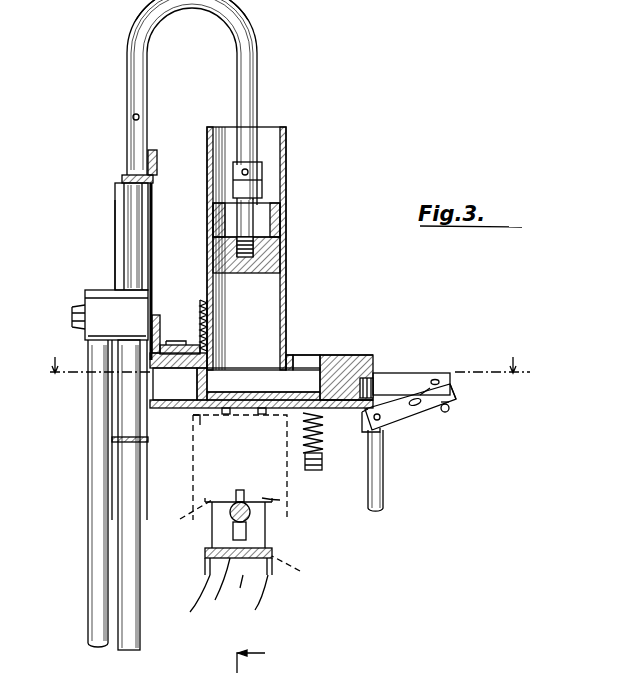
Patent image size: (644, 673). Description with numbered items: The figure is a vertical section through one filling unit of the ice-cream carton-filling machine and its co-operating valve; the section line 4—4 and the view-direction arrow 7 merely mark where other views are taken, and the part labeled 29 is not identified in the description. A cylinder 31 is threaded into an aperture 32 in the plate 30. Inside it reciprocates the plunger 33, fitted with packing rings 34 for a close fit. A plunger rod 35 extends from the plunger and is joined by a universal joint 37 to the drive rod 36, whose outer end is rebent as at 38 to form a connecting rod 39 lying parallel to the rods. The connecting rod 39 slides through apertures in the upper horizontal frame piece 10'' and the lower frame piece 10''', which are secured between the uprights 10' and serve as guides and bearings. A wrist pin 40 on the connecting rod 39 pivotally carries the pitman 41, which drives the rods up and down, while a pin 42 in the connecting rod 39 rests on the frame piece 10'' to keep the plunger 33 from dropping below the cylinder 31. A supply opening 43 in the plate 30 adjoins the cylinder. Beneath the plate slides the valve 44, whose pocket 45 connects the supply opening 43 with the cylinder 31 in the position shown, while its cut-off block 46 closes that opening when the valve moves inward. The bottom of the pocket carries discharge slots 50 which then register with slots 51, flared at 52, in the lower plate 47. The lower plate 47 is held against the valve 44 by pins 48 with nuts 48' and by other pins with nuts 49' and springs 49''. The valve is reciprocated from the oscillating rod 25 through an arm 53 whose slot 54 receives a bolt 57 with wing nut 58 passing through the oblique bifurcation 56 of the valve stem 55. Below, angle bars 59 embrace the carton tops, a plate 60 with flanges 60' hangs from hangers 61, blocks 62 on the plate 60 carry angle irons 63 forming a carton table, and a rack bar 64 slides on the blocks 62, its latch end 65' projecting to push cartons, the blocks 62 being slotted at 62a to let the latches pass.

The section line 4- 4 is at (284, 355).
The view direction 7 is at (259, 658).
The uprights 10' is at (75, 245).
The upper horizontal frame piece 10'' is at (107, 163).
The second horizontal frame piece 10''' is at (92, 495).
The oscillating rod 25 is at (385, 499).
The bar 29 is at (160, 312).
The plate 30 is at (185, 367).
The cylinder 31 is at (287, 302).
The aperture 32 is at (298, 385).
The plunger 33 is at (282, 253).
The packing rings 34 is at (268, 230).
The plunger rod 35 is at (262, 182).
The drive rod 36 is at (258, 74).
The universal joint 37 is at (248, 170).
The rebent portion 38 is at (222, 4).
The connecting rod 39 is at (132, 234).
The wrist pin 40 is at (118, 304).
The pitman 41 is at (93, 590).
The pin 42 is at (139, 116).
The supply opening 43 is at (372, 358).
The valve 44 is at (197, 420).
The pocket 45 is at (233, 372).
The cut-off block 46 is at (305, 363).
The lower plate 47 is at (350, 412).
The pins 48 is at (322, 454).
The nuts 48' is at (295, 513).
The nuts 49' is at (187, 316).
The springs 49'' is at (182, 333).
The discharge slots 50 is at (300, 392).
The slots 51 is at (200, 386).
The flared bottoms 52 is at (262, 412).
The arm 53 is at (385, 423).
The slot 54 is at (438, 379).
The valve stem 55 is at (456, 389).
The bifurcation 56 is at (428, 390).
The bolt 57 is at (452, 386).
The wing nut 58 is at (449, 411).
The angle bars 59 is at (283, 423).
The plate 60 is at (230, 588).
The flanges 60' is at (229, 601).
The hangers 61 is at (238, 543).
The blocks 62 is at (246, 505).
The slots 62a is at (240, 588).
The angle irons 63 is at (212, 540).
The rack bar 64 is at (207, 558).
The forward end of latch 65' is at (224, 499).